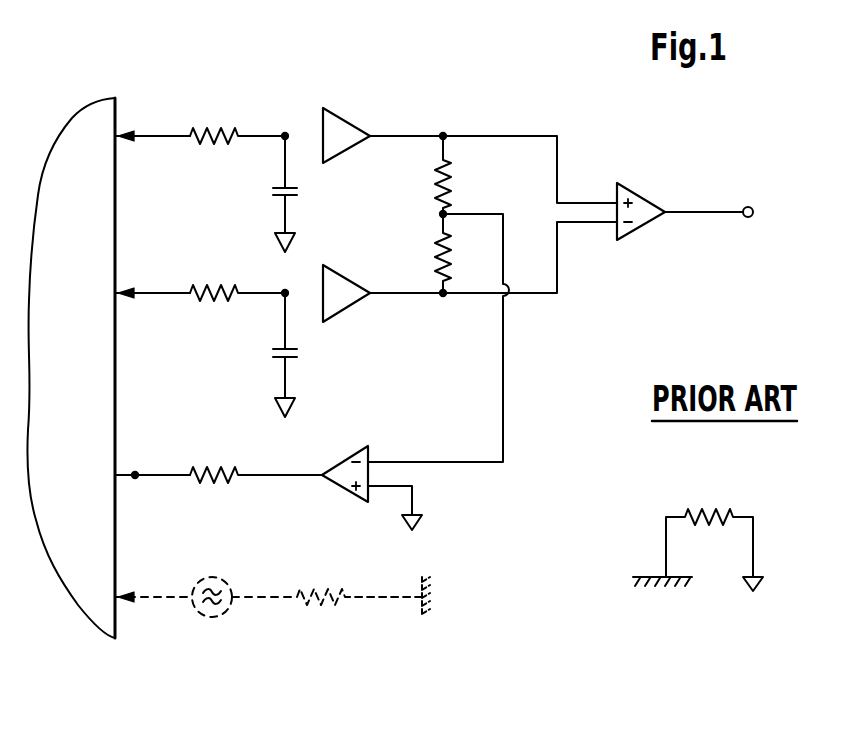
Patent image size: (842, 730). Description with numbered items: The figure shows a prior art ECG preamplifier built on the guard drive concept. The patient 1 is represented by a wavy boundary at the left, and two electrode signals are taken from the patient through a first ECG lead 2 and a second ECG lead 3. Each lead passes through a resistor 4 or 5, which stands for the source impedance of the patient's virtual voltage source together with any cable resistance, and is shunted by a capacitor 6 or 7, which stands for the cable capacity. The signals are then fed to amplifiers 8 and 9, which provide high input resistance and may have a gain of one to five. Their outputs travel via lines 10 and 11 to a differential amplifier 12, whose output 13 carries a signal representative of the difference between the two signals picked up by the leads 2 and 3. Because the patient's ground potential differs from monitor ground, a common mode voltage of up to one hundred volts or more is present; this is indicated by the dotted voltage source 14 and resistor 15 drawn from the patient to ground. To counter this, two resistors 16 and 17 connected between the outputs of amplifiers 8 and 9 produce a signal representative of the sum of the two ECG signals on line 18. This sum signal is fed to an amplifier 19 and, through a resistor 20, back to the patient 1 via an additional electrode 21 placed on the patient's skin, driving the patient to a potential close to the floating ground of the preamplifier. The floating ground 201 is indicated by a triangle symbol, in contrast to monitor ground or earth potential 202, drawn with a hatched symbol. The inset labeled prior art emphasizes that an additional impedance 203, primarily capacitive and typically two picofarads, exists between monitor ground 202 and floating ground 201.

The patient 1 is at (62, 552).
The first ECG lead 2 is at (128, 133).
The second ECG lead 3 is at (128, 290).
The resistor 4 is at (214, 130).
The resistor 5 is at (206, 286).
The capacitor 6 is at (290, 192).
The capacitor 7 is at (290, 353).
The amplifier 8 is at (340, 128).
The amplifier 9 is at (340, 285).
The line 10 is at (540, 134).
The line 11 is at (553, 294).
The differential amplifier 12 is at (640, 201).
The output 13 is at (752, 216).
The voltage source 14 is at (213, 621).
The resistor 15 is at (320, 615).
The resistor 16 is at (450, 183).
The resistor 17 is at (450, 250).
The line 18 is at (503, 420).
The amplifier 19 is at (342, 490).
The resistor 20 is at (211, 468).
The additional electrode 21 is at (134, 472).
The floating ground 201 is at (416, 527).
The monitor ground 202 is at (418, 620).
The impedance 203 is at (715, 510).